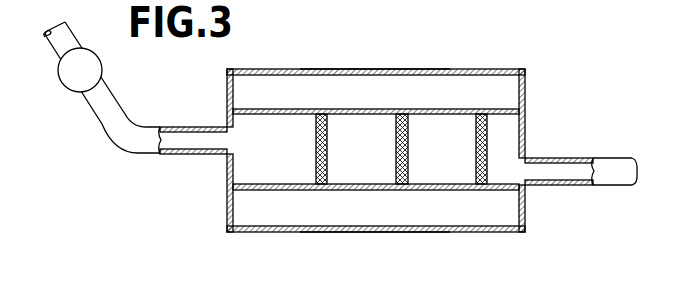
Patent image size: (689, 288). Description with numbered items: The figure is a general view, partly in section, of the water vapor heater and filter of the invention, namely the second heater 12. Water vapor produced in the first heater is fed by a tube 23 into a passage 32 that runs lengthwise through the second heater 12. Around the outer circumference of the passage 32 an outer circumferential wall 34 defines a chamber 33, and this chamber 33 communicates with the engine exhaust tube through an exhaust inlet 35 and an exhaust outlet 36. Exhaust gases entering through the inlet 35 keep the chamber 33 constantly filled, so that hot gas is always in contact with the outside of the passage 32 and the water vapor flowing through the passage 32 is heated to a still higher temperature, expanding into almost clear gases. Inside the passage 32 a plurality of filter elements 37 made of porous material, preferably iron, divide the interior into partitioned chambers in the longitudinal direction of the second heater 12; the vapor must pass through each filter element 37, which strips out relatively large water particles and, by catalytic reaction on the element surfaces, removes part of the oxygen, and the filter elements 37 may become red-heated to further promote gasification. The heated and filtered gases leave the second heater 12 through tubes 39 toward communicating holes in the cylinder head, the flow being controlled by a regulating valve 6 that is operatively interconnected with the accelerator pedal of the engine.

The second heater 12 is at (350, 52).
The water vapor passage 32 is at (257, 110).
The chamber 33 is at (465, 87).
The outer circumferential wall 34 is at (437, 70).
The exhaust inlet 35 is at (299, 233).
The exhaust outlet 36 is at (485, 232).
The filter element 37 is at (320, 114).
The tube 39 is at (139, 147).
The regulating valve 6 is at (100, 60).
The tube 23 is at (607, 180).